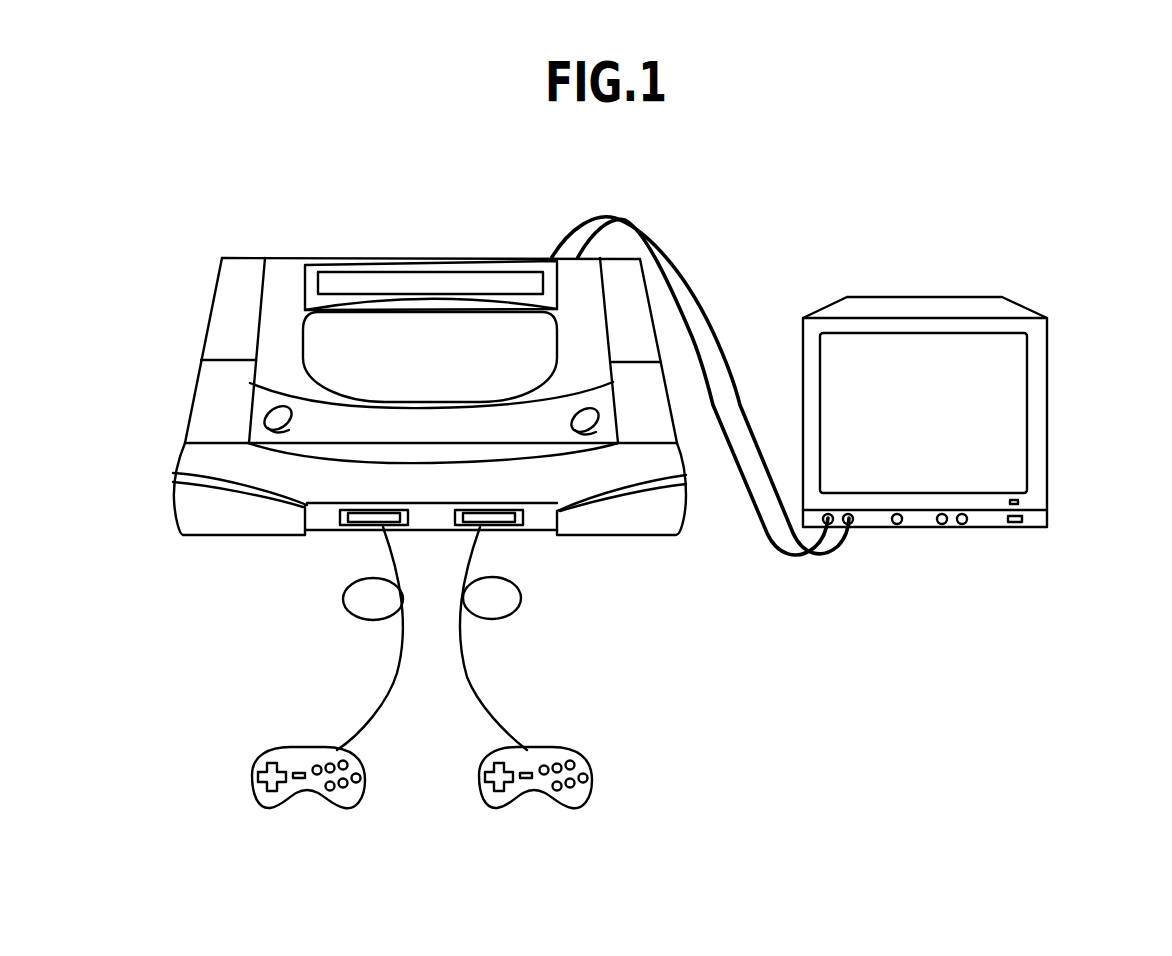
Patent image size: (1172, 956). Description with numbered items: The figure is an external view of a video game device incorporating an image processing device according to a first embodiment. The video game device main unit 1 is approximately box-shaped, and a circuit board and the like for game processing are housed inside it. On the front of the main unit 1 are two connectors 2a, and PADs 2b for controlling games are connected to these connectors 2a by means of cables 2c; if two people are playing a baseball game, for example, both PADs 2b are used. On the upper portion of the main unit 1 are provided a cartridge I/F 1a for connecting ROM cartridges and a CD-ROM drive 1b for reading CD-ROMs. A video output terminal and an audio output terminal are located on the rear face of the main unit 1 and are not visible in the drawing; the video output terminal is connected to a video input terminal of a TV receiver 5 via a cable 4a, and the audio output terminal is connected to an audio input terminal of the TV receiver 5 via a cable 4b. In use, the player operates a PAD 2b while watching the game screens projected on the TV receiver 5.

The video game device main unit 1 is at (435, 266).
The cartridge I/F 1a is at (347, 275).
The CD-ROM drive 1b is at (513, 327).
The connector 2a is at (347, 527).
The PAD 2b is at (257, 805).
The cable 2c is at (382, 695).
The cable 4a is at (711, 311).
The cable 4b is at (743, 477).
The TV receiver 5 is at (1048, 428).